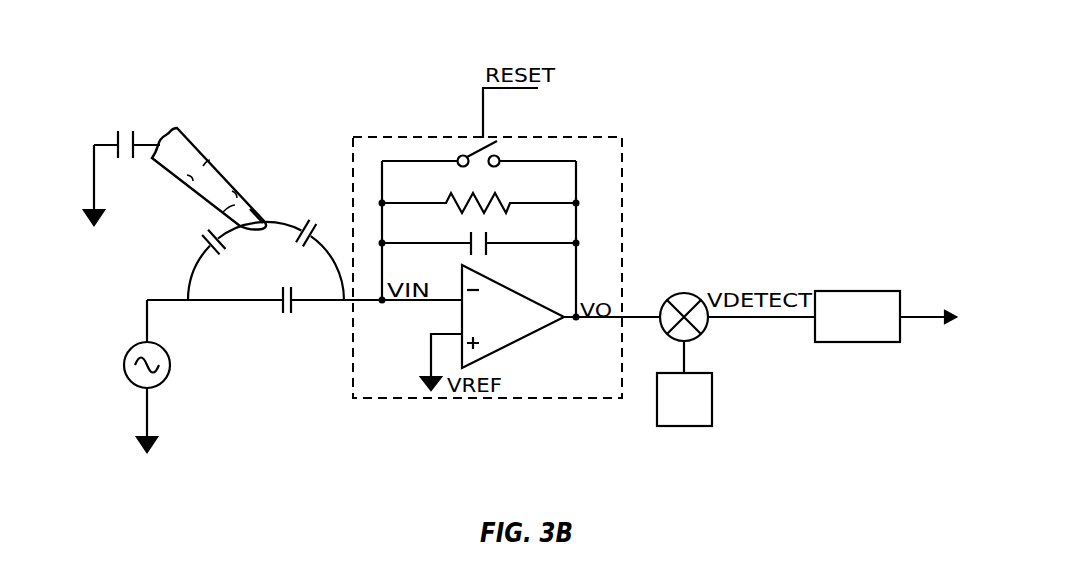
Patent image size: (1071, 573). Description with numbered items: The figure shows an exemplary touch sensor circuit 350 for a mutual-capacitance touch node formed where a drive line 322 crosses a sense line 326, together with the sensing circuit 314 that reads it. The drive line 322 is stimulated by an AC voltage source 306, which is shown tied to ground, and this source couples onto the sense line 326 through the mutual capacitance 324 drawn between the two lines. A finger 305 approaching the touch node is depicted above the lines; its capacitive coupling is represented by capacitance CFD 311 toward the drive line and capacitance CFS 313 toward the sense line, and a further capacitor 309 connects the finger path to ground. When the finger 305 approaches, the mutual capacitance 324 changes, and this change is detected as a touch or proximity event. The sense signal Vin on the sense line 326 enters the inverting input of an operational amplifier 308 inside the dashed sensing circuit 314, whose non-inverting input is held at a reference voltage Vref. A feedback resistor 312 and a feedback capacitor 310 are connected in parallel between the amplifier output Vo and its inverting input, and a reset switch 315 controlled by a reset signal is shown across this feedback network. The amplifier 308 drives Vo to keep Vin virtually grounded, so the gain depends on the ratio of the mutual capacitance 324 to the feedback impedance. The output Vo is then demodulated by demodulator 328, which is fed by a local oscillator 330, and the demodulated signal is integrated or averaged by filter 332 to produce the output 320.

The touch sensor circuit 350 is at (214, 74).
The capacitor to ground 309 is at (123, 130).
The finger 305 is at (210, 158).
The capacitance CFD 311 is at (202, 242).
The capacitance CFS 313 is at (308, 224).
The drive line 322 is at (165, 297).
The mutual capacitance 324 is at (280, 294).
The sense line 326 is at (315, 300).
The AC voltage source 306 is at (172, 368).
The sensing circuit 314 is at (398, 136).
The reset switch 315 is at (472, 153).
The feedback resistor 312 is at (505, 200).
The feedback capacitor 310 is at (488, 240).
The operational amplifier 308 is at (512, 343).
The demodulator 328 is at (683, 290).
The local oscillator 330 is at (687, 427).
The filter 332 is at (855, 290).
The output 320 is at (922, 314).